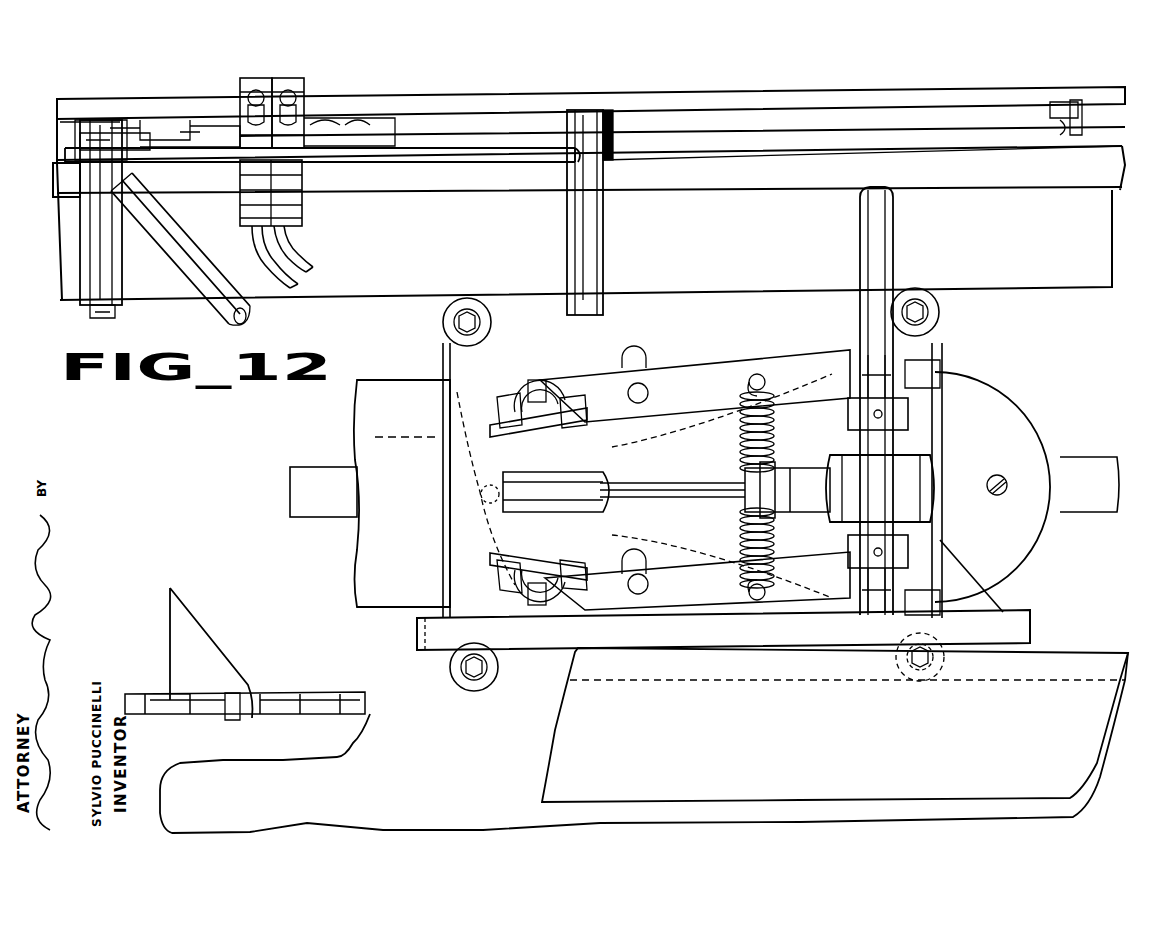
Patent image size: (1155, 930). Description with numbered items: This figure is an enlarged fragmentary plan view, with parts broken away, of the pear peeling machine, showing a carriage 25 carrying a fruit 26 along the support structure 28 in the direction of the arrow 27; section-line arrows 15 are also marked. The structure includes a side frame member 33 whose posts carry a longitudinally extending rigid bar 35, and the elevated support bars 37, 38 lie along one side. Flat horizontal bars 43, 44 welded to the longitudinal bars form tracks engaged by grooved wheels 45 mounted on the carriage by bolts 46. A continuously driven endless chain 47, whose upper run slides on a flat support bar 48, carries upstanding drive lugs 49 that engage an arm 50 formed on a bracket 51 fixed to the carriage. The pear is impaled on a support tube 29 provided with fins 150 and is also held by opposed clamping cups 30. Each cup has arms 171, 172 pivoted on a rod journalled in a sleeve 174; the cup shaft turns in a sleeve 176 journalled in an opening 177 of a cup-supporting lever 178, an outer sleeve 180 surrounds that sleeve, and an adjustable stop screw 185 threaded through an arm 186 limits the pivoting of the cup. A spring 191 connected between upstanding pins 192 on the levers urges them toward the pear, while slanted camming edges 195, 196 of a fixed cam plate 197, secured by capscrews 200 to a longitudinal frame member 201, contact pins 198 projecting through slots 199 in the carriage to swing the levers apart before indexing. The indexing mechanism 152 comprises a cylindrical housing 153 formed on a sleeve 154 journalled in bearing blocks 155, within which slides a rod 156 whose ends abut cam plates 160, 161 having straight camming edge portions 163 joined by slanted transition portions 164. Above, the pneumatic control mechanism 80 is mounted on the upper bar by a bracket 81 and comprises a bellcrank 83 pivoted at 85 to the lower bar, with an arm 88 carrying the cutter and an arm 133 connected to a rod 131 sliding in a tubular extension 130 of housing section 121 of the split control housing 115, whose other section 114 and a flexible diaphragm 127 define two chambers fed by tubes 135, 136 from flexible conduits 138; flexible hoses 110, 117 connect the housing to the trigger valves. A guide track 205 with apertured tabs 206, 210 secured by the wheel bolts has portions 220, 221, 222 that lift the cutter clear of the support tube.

The shaft 15 is at (390, 483).
The carriage 25 is at (765, 350).
The fruit 26 is at (660, 542).
The arrow 27 is at (210, 496).
The support structure 28 is at (591, 86).
The support tube 29 is at (680, 482).
The clamping cups 30 is at (490, 432).
The side frame member 33 is at (490, 128).
The rigid bar 35 is at (820, 148).
The support bar 37 is at (527, 150).
The support bar 38 is at (735, 98).
The track bar 43 is at (644, 743).
The track bar 44 is at (582, 199).
The grooved wheels 45 is at (455, 300).
The bolts 46 is at (470, 316).
The endless chain 47 is at (275, 693).
The flat support bar 48 is at (325, 693).
The drive lugs 49 is at (210, 710).
The arm 50 is at (232, 720).
The bracket 51 is at (985, 605).
The pneumatic control mechanism 80 is at (312, 92).
The bracket 81 is at (352, 138).
The bellcrank 83 is at (75, 232).
The pivot 85 is at (568, 222).
The bellcrank arm 88 is at (158, 226).
The flexible hose 110 is at (295, 247).
The housing section 114 is at (302, 222).
The control housing 115 is at (318, 183).
The flexible hose 117 is at (255, 246).
The housing section 121 is at (252, 205).
The flexible diaphragm 127 is at (302, 206).
The tubular extension 130 is at (200, 124).
The rod 131 is at (175, 118).
The bellcrank arm 133 is at (80, 140).
The tube 135 is at (254, 120).
The tube 136 is at (288, 120).
The flexible conduits 138 is at (292, 108).
The fins 150 is at (585, 472).
The indexing mechanism 152 is at (905, 470).
The cylindrical housing 153 is at (918, 482).
The sleeve 154 is at (888, 395).
The bearing blocks 155 is at (915, 420).
The rod 156 is at (880, 222).
The cam plate 160 is at (591, 169).
The cam plate 161 is at (835, 725).
The camming edge portion 163 is at (680, 192).
The transition portions 164 is at (1088, 192).
The arm 171 is at (570, 410).
The arm 172 is at (497, 410).
The sleeve 174 is at (565, 400).
The sleeve 176 is at (552, 395).
The opening 177 is at (515, 400).
The cup-supporting lever 178 is at (695, 480).
The outer sleeve 180 is at (548, 384).
The adjustable stop screw 185 is at (536, 380).
The arm 186 is at (522, 408).
The spring 191 is at (775, 437).
The upstanding pins 192 is at (765, 382).
The camming edge 195 is at (780, 420).
The camming edge 196 is at (780, 565).
The fixed cam plate 197 is at (1047, 413).
The pins 198 is at (643, 385).
The slots 199 is at (646, 358).
The capscrews 200 is at (984, 484).
The longitudinal frame member 201 is at (1088, 468).
The guide track 205 is at (798, 655).
The apertured tab 206 is at (940, 655).
The apertured tab 210 is at (496, 672).
The track portion 220 is at (886, 640).
The track portion 221 is at (518, 650).
The track portion 222 is at (660, 640).